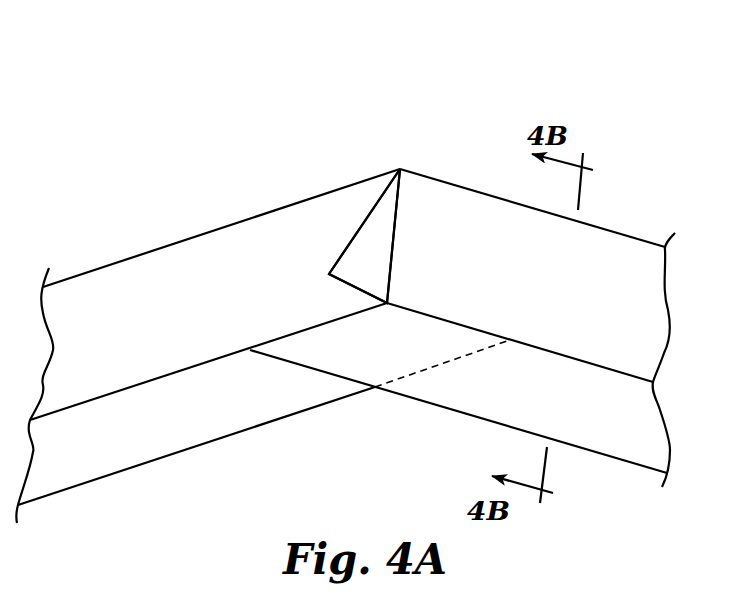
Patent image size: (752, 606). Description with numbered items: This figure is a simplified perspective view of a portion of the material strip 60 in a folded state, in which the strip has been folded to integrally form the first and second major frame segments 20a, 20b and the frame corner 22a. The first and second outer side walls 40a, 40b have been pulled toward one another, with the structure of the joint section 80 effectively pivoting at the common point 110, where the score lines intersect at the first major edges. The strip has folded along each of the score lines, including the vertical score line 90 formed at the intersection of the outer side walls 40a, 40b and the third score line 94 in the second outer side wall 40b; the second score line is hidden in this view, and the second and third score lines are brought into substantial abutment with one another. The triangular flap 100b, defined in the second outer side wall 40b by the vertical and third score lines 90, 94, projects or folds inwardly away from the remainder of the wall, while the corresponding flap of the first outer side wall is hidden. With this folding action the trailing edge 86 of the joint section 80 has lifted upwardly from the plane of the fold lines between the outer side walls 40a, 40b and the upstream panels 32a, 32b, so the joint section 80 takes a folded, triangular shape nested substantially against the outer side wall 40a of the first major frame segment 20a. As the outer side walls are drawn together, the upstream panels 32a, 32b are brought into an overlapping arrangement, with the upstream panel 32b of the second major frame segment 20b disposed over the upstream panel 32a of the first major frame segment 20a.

The first major frame segment 20a is at (188, 219).
The second major frame segment 20b is at (658, 207).
The frame corner 22a is at (403, 150).
The first upstream panel 32a is at (115, 449).
The second upstream panel 32b is at (620, 437).
The first outer side wall 40a is at (98, 298).
The second outer side wall 40b is at (608, 258).
The material strip 60 is at (495, 89).
The joint section 80 is at (420, 200).
The trailing edge 86 is at (353, 289).
The vertical score line 90 is at (348, 243).
The third score line 94 is at (393, 274).
The triangular flap 100b is at (382, 212).
The common point 110 is at (400, 166).